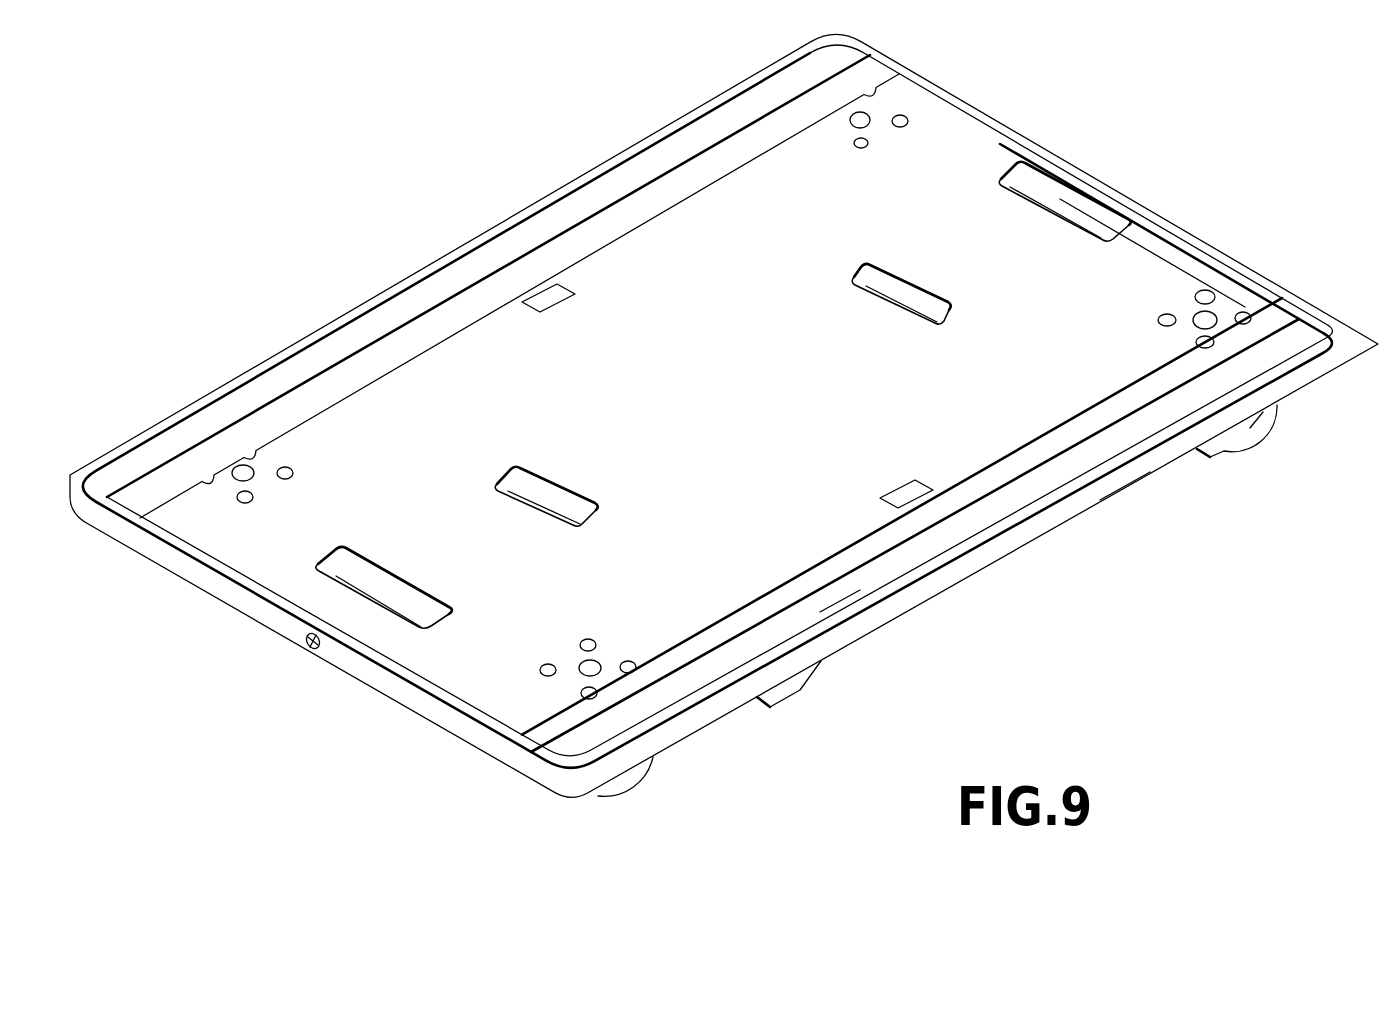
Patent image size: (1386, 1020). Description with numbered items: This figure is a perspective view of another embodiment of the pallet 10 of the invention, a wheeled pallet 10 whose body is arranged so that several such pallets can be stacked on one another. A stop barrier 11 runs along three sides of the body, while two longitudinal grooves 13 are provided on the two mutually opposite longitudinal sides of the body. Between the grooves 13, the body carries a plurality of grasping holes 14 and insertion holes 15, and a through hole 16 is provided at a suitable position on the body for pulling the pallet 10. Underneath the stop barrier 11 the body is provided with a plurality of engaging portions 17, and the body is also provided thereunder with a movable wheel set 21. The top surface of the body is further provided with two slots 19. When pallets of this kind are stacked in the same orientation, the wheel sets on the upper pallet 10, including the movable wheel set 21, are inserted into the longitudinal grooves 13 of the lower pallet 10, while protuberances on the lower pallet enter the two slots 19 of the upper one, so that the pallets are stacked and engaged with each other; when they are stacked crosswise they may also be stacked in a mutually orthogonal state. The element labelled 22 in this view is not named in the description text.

The pallet 10 is at (278, 270).
The stop barrier 11 is at (1045, 500).
The longitudinal groove 13 is at (835, 598).
The grasping hole 14 is at (1050, 203).
The insertion hole 15 is at (518, 490).
The through hole 16 is at (310, 650).
The engaging portion 17 is at (786, 698).
The slot 19 is at (542, 300).
The movable wheel set 21 is at (1262, 437).
The wheel 22 is at (615, 795).